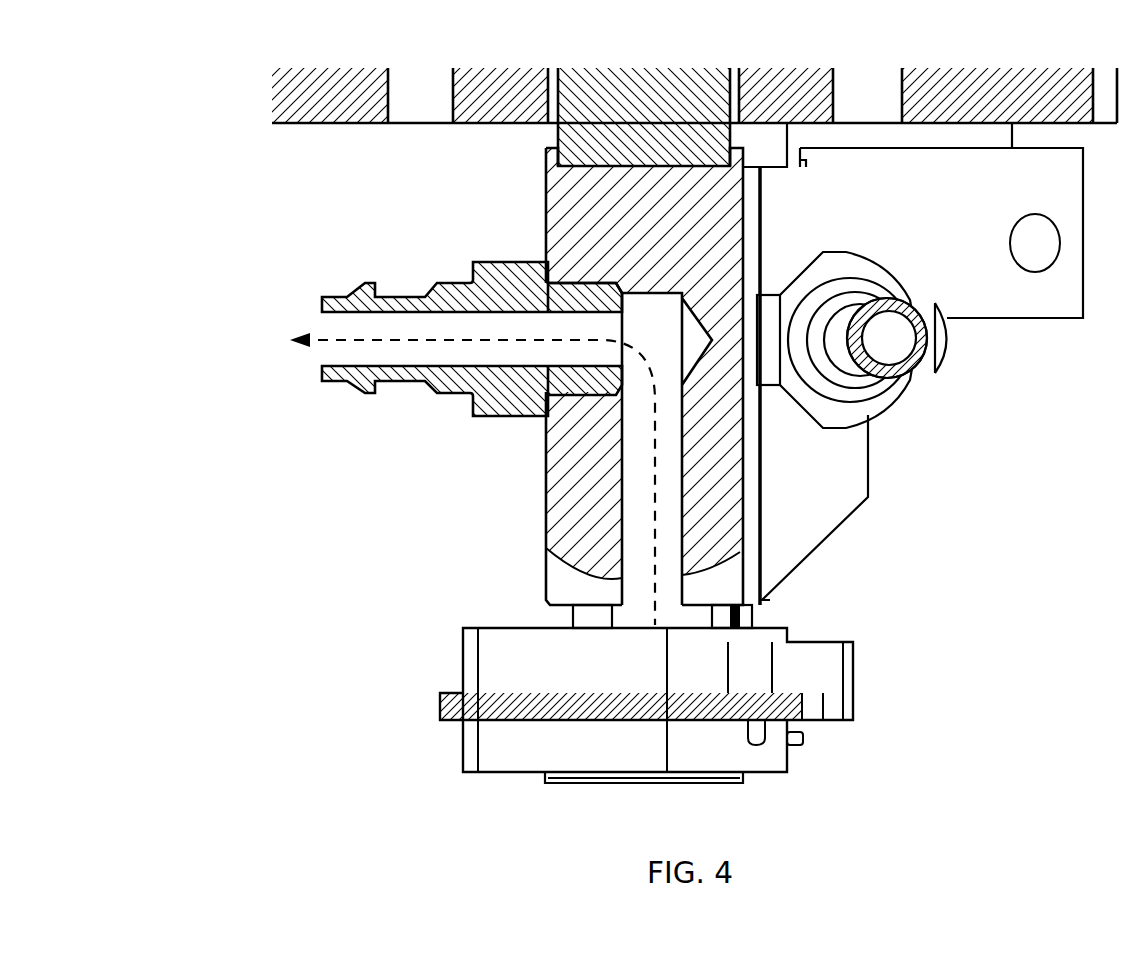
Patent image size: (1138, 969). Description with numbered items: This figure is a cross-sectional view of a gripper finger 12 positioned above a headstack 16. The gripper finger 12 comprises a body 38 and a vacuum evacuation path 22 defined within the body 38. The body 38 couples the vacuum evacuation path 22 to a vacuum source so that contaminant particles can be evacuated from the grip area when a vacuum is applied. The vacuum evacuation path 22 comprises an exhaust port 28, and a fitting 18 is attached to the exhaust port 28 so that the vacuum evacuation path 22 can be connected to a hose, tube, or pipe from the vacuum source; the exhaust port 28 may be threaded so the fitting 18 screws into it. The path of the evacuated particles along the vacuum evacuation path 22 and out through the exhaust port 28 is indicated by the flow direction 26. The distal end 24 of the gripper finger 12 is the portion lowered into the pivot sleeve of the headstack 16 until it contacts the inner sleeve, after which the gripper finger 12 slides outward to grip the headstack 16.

The gripper finger 12 is at (290, 158).
The exhaust port 28 is at (575, 280).
The fitting 18 is at (345, 297).
The flow direction 26 is at (340, 343).
The body 38 is at (570, 475).
The vacuum evacuation path 22 is at (635, 537).
The distal end 24 is at (605, 595).
The headstack 16 is at (505, 737).